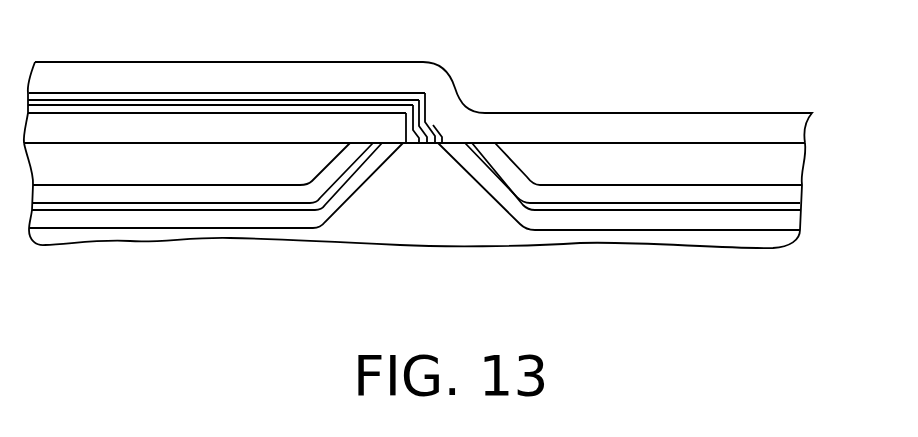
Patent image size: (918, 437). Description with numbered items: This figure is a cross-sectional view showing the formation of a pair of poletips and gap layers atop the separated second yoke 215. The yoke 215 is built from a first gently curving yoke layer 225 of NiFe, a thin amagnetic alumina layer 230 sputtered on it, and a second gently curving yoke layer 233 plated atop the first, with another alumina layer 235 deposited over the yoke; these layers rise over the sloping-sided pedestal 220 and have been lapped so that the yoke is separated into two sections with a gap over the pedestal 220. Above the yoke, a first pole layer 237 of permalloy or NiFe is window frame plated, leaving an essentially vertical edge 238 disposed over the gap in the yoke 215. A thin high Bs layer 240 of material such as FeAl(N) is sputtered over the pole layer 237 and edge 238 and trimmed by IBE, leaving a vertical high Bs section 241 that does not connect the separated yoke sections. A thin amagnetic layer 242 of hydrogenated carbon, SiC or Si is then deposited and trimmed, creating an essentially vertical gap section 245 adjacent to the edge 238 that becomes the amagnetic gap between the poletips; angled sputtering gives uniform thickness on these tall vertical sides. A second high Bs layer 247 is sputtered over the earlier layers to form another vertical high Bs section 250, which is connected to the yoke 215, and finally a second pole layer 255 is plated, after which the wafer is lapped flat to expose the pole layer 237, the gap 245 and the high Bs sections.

The second yoke 215 is at (817, 186).
The pedestal 220 is at (399, 201).
The first yoke layer 225 is at (72, 218).
The amagnetic alumina layer 230 is at (150, 208).
The second yoke layer 233 is at (668, 197).
The alumina layer 235 is at (748, 172).
The first pole layer 237 is at (145, 123).
The vertical edge 238 is at (398, 127).
The high Bs layer 240 is at (241, 113).
The vertical high Bs section 241 is at (428, 123).
The amagnetic layer 242 is at (280, 98).
The gap section 245 is at (420, 110).
The second high Bs layer 247 is at (73, 92).
The vertical high Bs section 250 is at (430, 100).
The second pole layer 255 is at (738, 122).